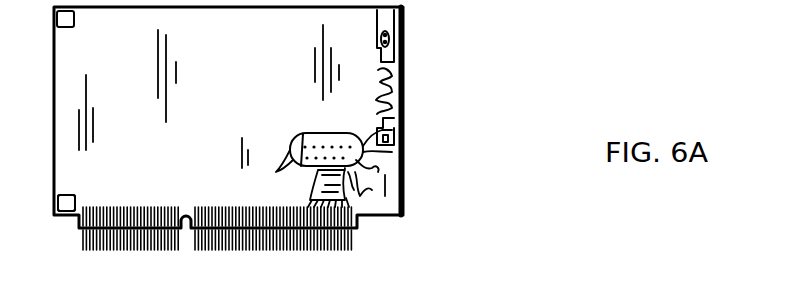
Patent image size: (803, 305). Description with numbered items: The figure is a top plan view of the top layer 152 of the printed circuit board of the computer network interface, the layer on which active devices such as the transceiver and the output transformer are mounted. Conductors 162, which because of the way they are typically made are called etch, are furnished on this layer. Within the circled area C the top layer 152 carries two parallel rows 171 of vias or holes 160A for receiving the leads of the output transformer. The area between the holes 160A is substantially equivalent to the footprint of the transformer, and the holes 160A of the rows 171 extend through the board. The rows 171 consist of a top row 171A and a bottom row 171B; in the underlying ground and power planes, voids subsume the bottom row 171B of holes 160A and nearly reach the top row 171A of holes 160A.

The top layer 152 is at (412, 93).
The conductors 162 is at (95, 185).
The vias or holes 160A is at (302, 141).
The rows 171 is at (290, 160).
The top row 171A is at (366, 150).
The bottom row 171B is at (378, 178).
The circled area C is at (298, 142).